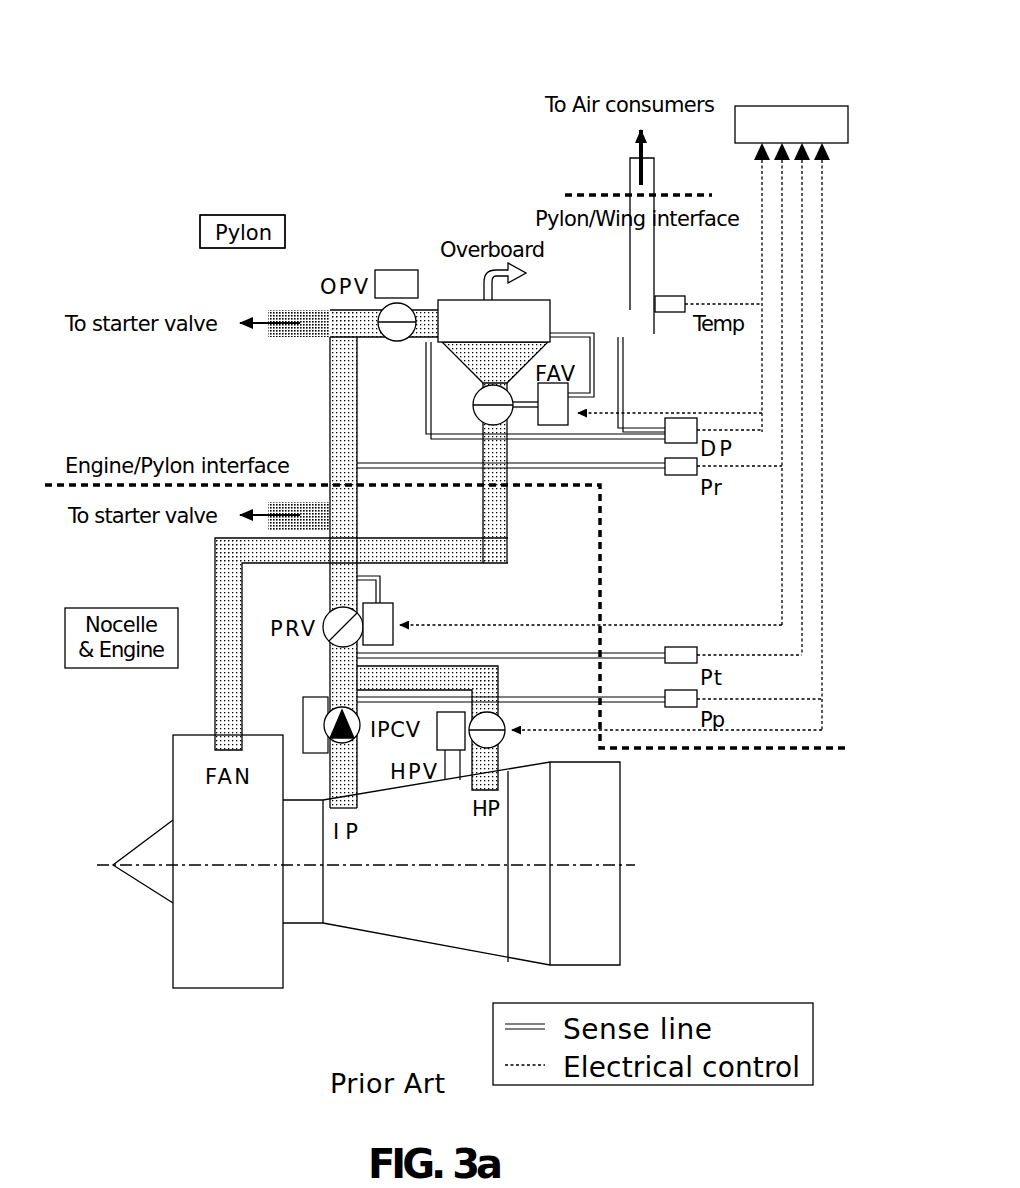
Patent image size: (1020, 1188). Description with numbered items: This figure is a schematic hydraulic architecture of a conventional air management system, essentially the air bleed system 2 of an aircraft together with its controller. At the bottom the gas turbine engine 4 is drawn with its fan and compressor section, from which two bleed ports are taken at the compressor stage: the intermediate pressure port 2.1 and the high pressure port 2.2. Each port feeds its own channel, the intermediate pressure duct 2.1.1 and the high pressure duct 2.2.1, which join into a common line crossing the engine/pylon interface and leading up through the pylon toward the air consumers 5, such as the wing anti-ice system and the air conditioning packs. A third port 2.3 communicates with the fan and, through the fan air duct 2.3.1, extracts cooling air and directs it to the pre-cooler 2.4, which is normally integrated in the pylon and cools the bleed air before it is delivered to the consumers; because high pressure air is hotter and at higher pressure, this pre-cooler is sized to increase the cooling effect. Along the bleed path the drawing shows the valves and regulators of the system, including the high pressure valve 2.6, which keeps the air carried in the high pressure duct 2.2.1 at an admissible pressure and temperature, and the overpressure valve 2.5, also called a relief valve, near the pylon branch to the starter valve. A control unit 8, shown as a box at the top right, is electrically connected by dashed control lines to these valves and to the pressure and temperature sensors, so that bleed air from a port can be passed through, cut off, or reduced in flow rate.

The air bleed system 2 is at (176, 288).
The IP port 2.1 is at (340, 852).
The IP duct 2.1.1 is at (345, 775).
The HP port 2.2 is at (479, 824).
The HP duct 2.2.1 is at (510, 658).
The third port 2.3 is at (222, 741).
The fan air duct 2.3.1 is at (225, 558).
The pre-cooler 2.4 is at (455, 294).
The overpressure valve 2.5 is at (378, 262).
The high pressure valve 2.6 is at (516, 744).
The gas turbine engine 4 is at (636, 922).
The air consumers 5 is at (645, 92).
The control unit 8 is at (810, 118).